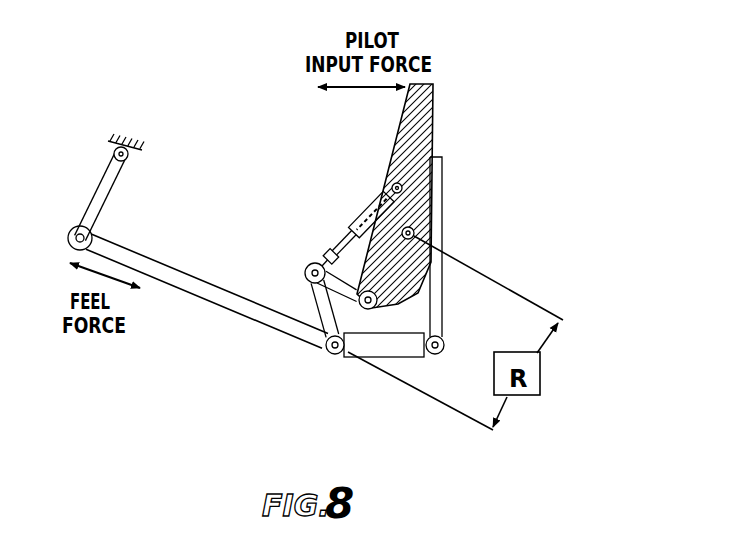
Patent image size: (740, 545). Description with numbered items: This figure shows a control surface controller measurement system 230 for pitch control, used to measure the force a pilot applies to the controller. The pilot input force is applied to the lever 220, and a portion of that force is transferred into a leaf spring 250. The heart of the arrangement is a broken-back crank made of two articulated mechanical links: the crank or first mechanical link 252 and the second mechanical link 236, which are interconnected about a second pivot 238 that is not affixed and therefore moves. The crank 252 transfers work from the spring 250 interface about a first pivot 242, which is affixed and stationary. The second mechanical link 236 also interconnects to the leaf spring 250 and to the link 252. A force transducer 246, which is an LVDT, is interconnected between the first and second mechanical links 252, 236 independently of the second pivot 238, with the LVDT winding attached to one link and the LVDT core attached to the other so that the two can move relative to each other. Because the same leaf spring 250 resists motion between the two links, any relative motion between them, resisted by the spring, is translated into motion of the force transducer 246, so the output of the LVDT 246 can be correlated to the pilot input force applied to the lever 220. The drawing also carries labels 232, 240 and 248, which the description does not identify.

The control surface controller measurement system 230 is at (485, 84).
The lever 220 is at (433, 137).
The stick assembly 232 is at (325, 178).
The second mechanical link 236 is at (331, 352).
The second pivot 238 is at (392, 302).
The feel rod 240 is at (195, 296).
The first pivot 242 is at (414, 230).
The force transducer 246 is at (368, 212).
The bellcrank link 248 is at (302, 316).
The leaf spring 250 is at (442, 232).
The first mechanical link 252 is at (397, 354).